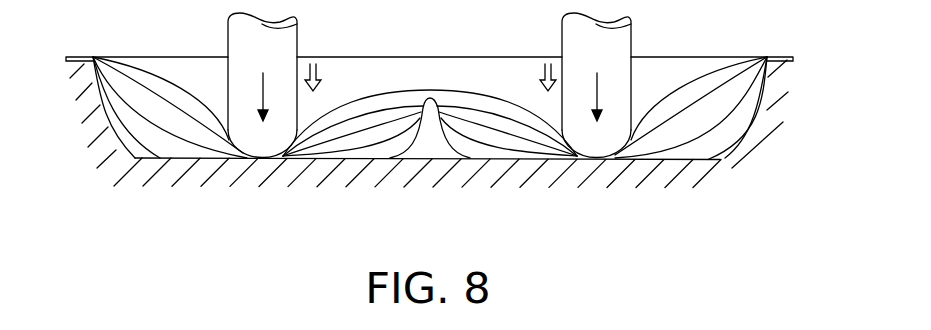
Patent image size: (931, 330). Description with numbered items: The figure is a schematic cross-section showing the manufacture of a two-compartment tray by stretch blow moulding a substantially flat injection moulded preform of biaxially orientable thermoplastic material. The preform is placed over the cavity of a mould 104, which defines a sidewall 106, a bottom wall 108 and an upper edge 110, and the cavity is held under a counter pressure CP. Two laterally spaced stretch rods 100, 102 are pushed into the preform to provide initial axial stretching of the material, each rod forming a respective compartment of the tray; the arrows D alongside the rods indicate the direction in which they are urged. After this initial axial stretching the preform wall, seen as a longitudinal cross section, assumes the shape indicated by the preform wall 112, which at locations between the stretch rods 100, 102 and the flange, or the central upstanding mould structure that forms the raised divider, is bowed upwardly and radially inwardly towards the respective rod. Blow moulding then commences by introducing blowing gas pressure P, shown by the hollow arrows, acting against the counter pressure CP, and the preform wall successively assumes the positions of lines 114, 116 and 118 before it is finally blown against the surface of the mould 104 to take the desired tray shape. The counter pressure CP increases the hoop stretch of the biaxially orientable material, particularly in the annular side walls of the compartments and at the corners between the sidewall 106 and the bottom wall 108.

The stretch rod 100 is at (242, 37).
The stretch rod 102 is at (612, 53).
The mould 104 is at (136, 149).
The sidewall 106 is at (101, 100).
The bottom wall 108 is at (312, 158).
The upper edge 110 is at (137, 55).
The preform wall 112 is at (391, 93).
The line 114 is at (416, 108).
The line 116 is at (458, 118).
The line 118 is at (479, 147).
The pressing direction D is at (260, 97).
The blowing pressure P is at (430, 88).
The counter pressure CP is at (158, 147).